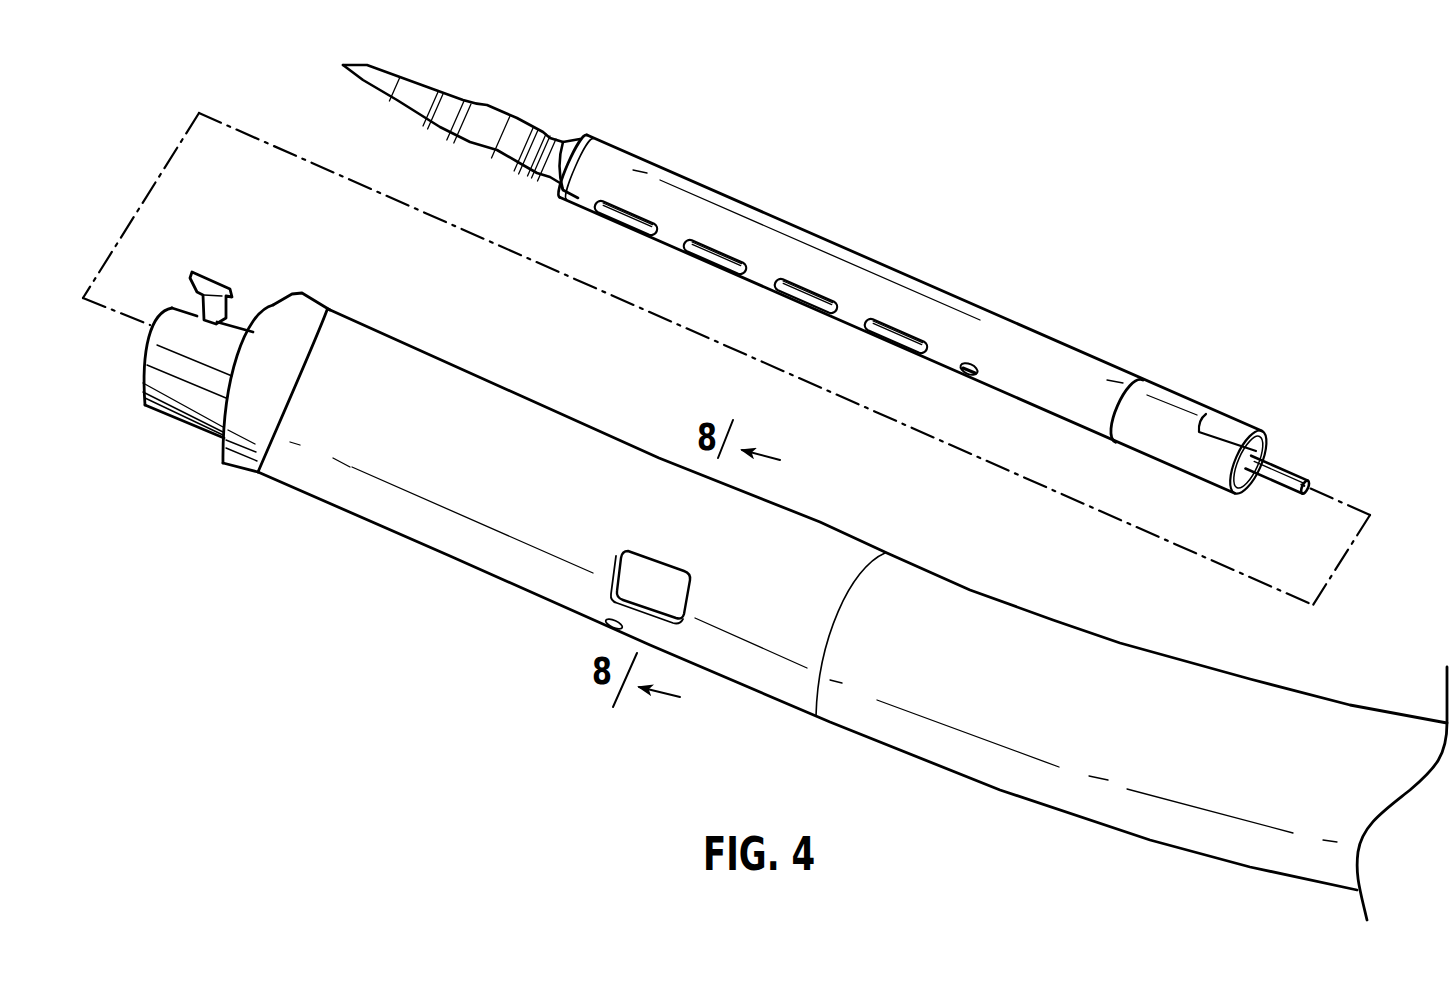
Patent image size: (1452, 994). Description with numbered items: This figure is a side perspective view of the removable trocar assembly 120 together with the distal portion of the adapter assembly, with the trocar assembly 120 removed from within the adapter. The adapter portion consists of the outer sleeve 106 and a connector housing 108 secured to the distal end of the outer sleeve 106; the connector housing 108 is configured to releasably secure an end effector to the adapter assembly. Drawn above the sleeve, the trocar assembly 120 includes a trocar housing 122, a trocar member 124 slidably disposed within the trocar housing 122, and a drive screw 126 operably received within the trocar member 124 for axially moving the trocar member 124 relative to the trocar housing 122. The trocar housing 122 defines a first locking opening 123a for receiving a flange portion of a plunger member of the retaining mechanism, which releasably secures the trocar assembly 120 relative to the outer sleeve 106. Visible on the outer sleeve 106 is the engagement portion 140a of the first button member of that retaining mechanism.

The outer sleeve 106 is at (356, 500).
The connector housing 108 is at (222, 463).
The trocar assembly 120 is at (1078, 253).
The trocar housing 122 is at (915, 317).
The first locking opening 123a is at (967, 377).
The trocar member 124 is at (567, 112).
The drive screw 126 is at (1285, 453).
The engagement portion 140a is at (637, 573).